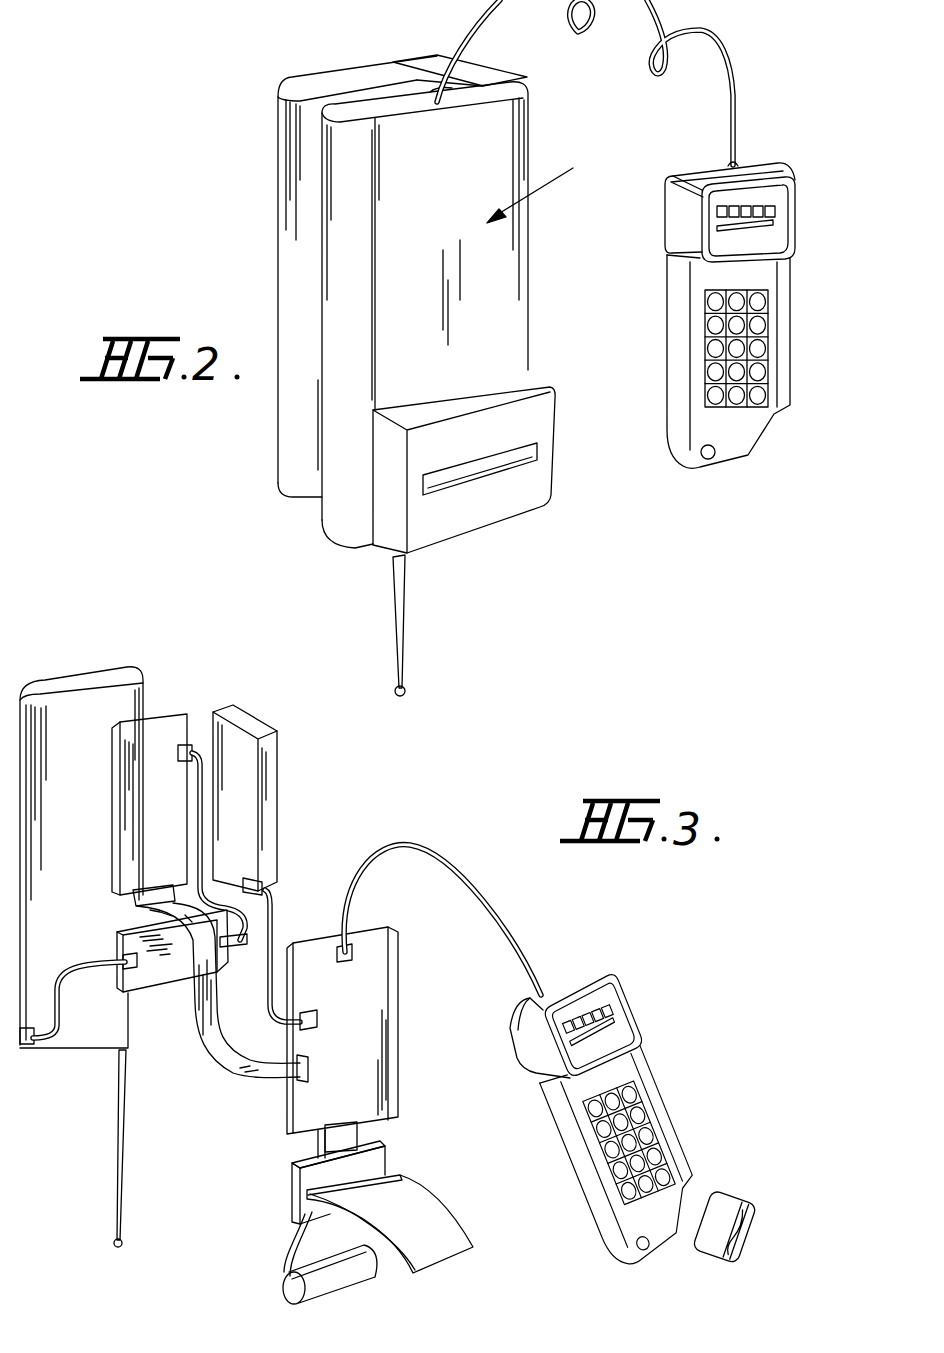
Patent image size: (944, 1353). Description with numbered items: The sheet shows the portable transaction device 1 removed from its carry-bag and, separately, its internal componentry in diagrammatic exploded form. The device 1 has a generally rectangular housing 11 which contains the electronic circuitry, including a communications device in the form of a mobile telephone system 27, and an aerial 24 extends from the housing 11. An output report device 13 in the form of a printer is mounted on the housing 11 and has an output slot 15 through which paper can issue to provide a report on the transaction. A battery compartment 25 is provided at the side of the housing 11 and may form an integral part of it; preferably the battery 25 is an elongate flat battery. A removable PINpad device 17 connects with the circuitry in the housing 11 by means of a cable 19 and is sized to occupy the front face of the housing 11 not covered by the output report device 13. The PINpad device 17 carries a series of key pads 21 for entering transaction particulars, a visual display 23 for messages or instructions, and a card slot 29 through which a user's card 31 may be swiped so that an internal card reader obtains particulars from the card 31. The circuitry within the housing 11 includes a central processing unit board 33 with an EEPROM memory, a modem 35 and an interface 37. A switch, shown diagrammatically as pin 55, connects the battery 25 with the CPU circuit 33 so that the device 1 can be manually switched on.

In FIG. 2, the device 1 is at (538, 182).
In FIG. 2, the housing 11 is at (390, 165).
In FIG. 2, the output report device 13 is at (512, 490).
In FIG. 3, the output report device 13 is at (290, 1178).
In FIG. 2, the output slot 15 is at (465, 478).
In FIG. 3, the output slot 15 is at (312, 1220).
In FIG. 2, the PINpad device 17 is at (703, 275).
In FIG. 3, the PINpad device 17 is at (552, 1090).
In FIG. 2, the cable 19 is at (735, 80).
In FIG. 3, the cable 19 is at (390, 840).
In FIG. 2, the key pads 21 is at (755, 385).
In FIG. 3, the key pads 21 is at (647, 1155).
In FIG. 2, the visual display 23 is at (775, 215).
In FIG. 3, the visual display 23 is at (620, 1020).
In FIG. 2, the aerial 24 is at (393, 583).
In FIG. 3, the aerial 24 is at (112, 1135).
In FIG. 2, the battery compartment 25 is at (483, 78).
In FIG. 3, the battery compartment 25 is at (270, 780).
In FIG. 2, the mobile telephone system 27 is at (310, 130).
In FIG. 3, the mobile telephone system 27 is at (75, 717).
In FIG. 2, the card slot 29 is at (782, 297).
In FIG. 3, the card slot 29 is at (650, 1085).
In FIG. 3, the user's card 31 is at (707, 1245).
In FIG. 3, the central processing unit board 33 is at (378, 1005).
In FIG. 3, the modem 35 is at (165, 752).
In FIG. 3, the interface 37 is at (157, 975).
In FIG. 2, the pin 55 is at (700, 458).
In FIG. 3, the pin 55 is at (645, 1252).